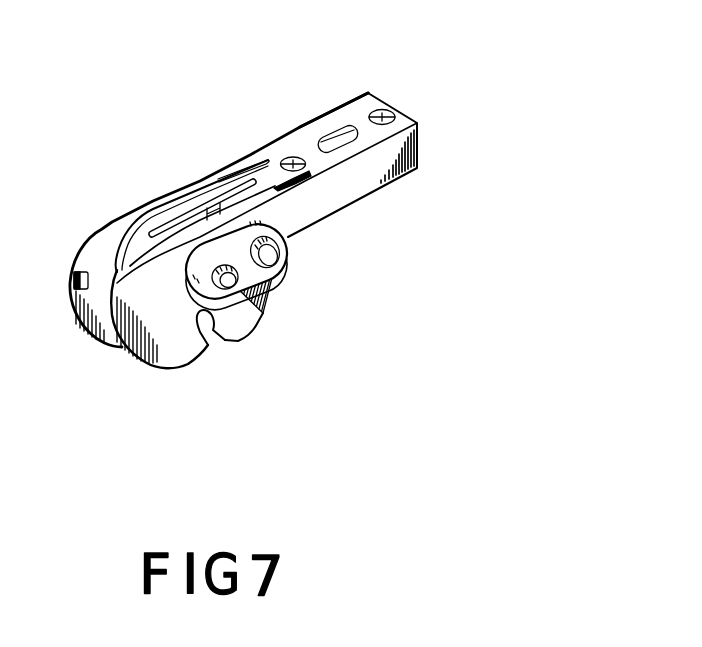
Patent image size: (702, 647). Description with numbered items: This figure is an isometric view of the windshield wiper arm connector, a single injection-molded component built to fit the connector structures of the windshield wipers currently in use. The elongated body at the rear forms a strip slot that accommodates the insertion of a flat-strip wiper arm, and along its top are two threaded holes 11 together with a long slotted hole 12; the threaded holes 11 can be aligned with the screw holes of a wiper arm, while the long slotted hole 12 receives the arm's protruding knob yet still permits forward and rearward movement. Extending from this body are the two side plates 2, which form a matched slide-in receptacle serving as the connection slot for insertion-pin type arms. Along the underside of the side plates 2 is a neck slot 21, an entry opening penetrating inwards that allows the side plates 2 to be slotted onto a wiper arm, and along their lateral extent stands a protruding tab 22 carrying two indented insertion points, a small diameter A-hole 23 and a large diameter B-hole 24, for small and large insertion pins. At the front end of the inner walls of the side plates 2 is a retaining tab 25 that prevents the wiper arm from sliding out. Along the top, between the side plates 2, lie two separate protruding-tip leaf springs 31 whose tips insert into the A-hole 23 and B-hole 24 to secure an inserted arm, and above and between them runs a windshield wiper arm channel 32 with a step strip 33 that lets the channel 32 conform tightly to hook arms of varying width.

The side plates 2 is at (93, 334).
The threaded holes 11 is at (384, 115).
The long slotted hole 12 is at (340, 142).
The neck slot 21 is at (210, 325).
The protruding tab 22 is at (279, 250).
The small diameter A-hole 23 is at (263, 322).
The large diameter B-hole 24 is at (230, 281).
The retaining tab 25 is at (75, 272).
The protruding-tip leaf springs 31 is at (233, 203).
The windshield wiper arm channel 32 is at (305, 140).
The step strip 33 is at (258, 158).